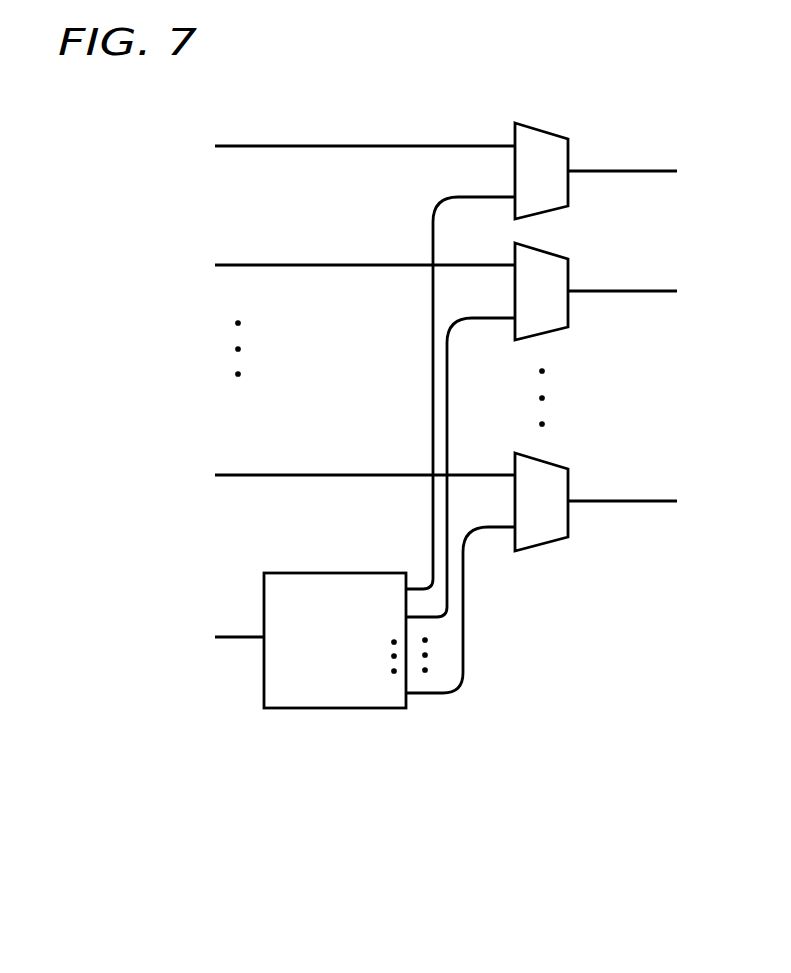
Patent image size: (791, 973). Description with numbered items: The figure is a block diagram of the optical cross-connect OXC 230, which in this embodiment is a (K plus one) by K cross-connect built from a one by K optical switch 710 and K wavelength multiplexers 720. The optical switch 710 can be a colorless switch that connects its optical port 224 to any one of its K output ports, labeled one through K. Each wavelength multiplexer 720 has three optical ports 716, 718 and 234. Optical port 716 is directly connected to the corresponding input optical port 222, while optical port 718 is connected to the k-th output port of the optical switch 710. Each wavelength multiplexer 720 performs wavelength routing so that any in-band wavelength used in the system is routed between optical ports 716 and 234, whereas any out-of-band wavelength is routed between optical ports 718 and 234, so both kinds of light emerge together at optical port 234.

The optical cross-connect (OXC) 230 is at (143, 104).
The optical port 222 is at (240, 475).
The optical port 716 is at (484, 475).
The optical port 718 is at (489, 583).
The wavelength multiplexer 720 is at (541, 131).
The optical port 234 is at (654, 501).
The 1×K optical switch 710 is at (336, 573).
The optical port 224 is at (239, 637).